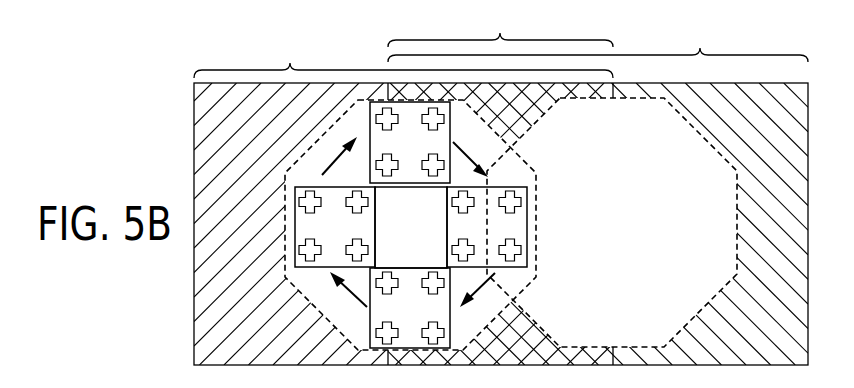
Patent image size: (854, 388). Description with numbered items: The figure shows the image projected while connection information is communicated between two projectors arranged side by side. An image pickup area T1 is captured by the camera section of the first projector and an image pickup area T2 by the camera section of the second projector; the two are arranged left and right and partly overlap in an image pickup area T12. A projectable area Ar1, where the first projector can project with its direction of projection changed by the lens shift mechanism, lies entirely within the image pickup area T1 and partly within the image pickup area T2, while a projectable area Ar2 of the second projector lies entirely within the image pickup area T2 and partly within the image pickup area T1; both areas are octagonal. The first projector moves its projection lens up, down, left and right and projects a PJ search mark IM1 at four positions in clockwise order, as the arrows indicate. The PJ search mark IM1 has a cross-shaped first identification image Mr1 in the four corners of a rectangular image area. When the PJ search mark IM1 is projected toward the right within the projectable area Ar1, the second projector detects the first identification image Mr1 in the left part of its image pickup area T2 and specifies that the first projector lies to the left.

The projectable area Ar1 is at (330, 146).
The projectable area Ar2 is at (698, 142).
The PJ search mark IM1 is at (510, 185).
The first identification image Mr1 is at (517, 208).
The image pickup area T1 is at (403, 60).
The image pickup area T12 is at (500, 29).
The image pickup area T2 is at (598, 46).